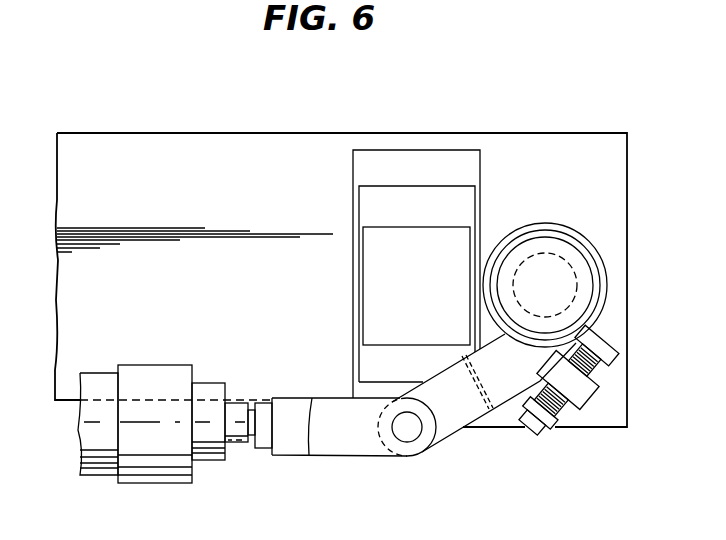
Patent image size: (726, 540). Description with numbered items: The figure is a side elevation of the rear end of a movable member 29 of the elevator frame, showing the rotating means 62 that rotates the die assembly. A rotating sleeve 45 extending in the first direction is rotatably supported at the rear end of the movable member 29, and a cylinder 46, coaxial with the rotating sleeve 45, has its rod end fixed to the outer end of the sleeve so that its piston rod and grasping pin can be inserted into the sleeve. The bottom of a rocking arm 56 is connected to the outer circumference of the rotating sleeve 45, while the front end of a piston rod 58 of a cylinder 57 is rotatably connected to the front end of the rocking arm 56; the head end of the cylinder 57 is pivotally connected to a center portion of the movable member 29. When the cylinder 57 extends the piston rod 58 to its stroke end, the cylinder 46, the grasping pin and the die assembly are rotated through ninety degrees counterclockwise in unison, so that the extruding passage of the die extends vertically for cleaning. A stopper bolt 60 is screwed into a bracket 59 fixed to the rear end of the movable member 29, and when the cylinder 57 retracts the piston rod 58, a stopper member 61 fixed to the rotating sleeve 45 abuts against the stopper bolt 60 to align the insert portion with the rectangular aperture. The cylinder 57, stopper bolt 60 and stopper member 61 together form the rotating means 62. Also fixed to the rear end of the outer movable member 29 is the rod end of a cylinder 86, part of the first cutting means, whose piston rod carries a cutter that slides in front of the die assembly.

The movable member 29 is at (271, 136).
The cylinder 86 is at (360, 262).
The rotating sleeve 45 is at (598, 250).
The cylinder 46 is at (543, 240).
The rocking arm 56 is at (458, 417).
The rotating means 62 is at (372, 458).
The cylinder 57 is at (97, 467).
The piston rod 58 is at (238, 443).
The bracket 59 is at (585, 392).
The stopper bolt 60 is at (542, 434).
The stopper member 61 is at (612, 336).